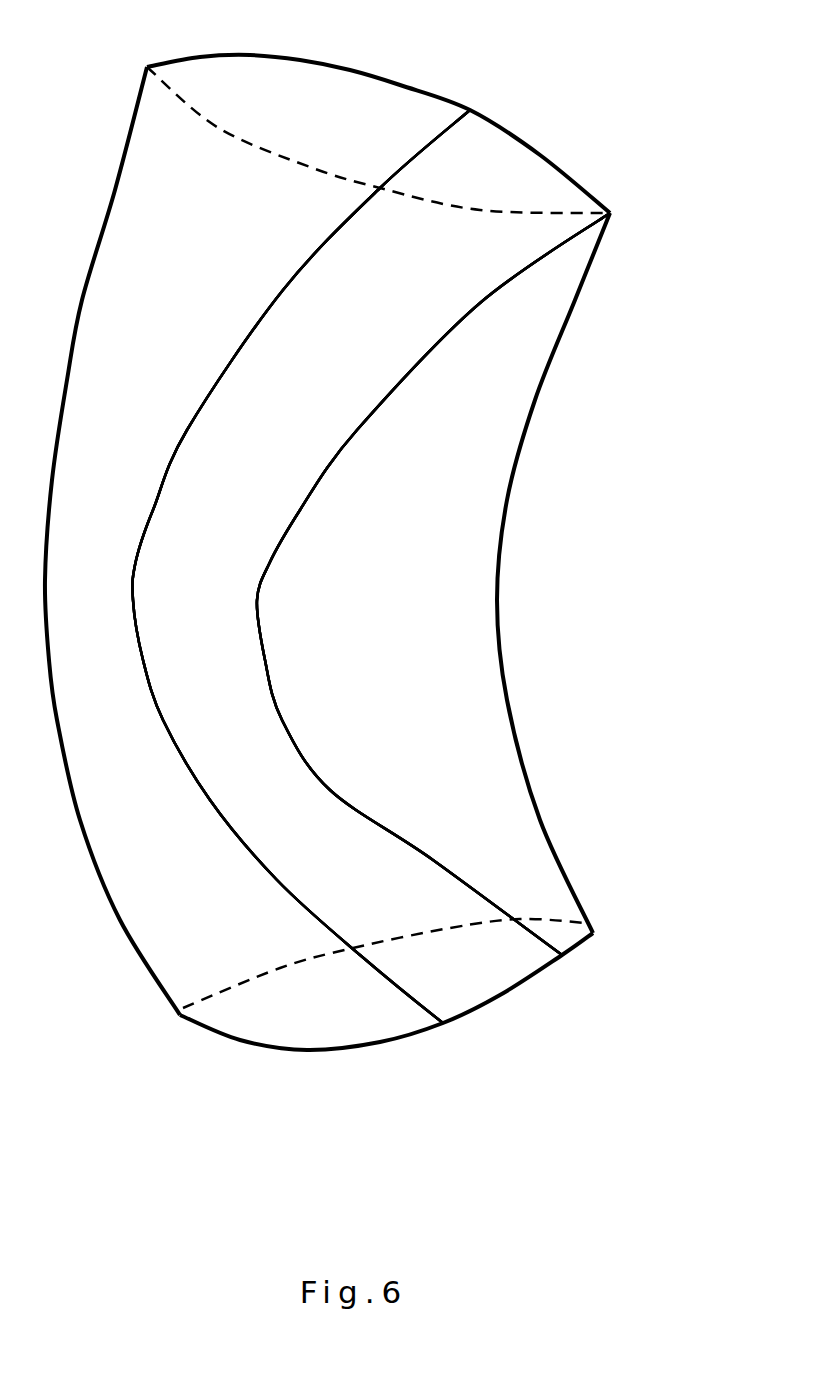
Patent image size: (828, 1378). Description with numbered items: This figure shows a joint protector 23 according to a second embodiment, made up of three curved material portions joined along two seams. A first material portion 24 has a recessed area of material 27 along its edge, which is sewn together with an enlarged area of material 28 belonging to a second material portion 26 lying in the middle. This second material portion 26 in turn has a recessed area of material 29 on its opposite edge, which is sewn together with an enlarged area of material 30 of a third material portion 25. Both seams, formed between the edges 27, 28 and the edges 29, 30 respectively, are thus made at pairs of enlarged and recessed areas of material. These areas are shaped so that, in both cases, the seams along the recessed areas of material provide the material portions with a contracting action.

The abrasive segment / lens blank 23 is at (598, 88).
The first material portion 24 is at (182, 256).
The third material portion 25 is at (455, 513).
The second material portion 26 is at (365, 321).
The recessed area of material 27 is at (153, 510).
The enlarged area of material 28 is at (120, 565).
The recessed area of material 29 is at (270, 562).
The enlarged area of material 30 is at (260, 595).